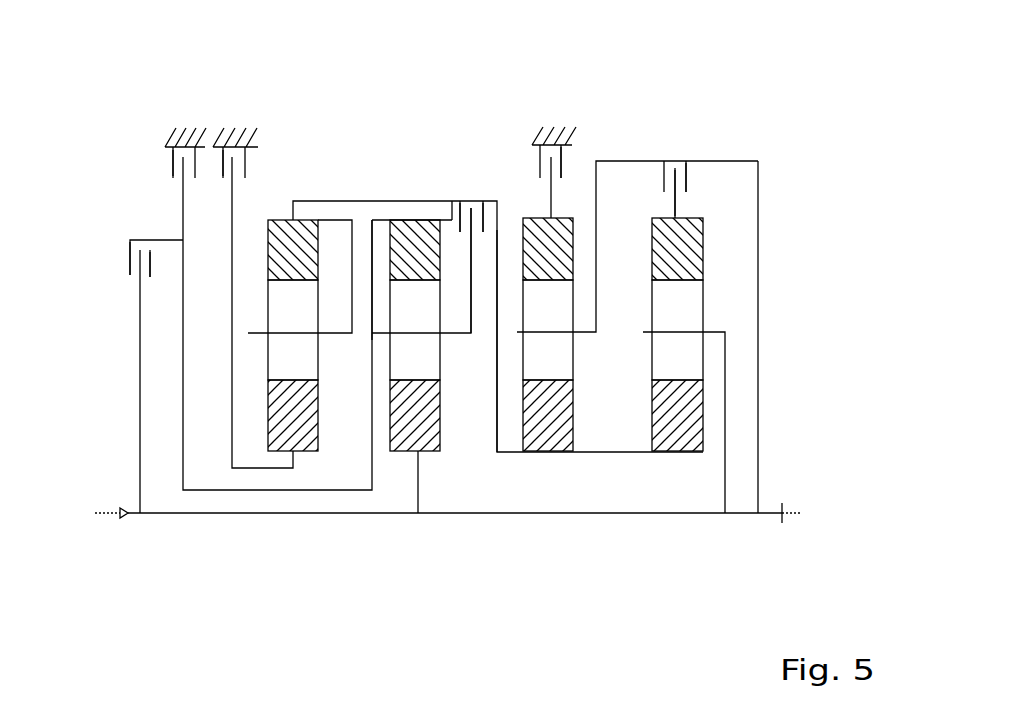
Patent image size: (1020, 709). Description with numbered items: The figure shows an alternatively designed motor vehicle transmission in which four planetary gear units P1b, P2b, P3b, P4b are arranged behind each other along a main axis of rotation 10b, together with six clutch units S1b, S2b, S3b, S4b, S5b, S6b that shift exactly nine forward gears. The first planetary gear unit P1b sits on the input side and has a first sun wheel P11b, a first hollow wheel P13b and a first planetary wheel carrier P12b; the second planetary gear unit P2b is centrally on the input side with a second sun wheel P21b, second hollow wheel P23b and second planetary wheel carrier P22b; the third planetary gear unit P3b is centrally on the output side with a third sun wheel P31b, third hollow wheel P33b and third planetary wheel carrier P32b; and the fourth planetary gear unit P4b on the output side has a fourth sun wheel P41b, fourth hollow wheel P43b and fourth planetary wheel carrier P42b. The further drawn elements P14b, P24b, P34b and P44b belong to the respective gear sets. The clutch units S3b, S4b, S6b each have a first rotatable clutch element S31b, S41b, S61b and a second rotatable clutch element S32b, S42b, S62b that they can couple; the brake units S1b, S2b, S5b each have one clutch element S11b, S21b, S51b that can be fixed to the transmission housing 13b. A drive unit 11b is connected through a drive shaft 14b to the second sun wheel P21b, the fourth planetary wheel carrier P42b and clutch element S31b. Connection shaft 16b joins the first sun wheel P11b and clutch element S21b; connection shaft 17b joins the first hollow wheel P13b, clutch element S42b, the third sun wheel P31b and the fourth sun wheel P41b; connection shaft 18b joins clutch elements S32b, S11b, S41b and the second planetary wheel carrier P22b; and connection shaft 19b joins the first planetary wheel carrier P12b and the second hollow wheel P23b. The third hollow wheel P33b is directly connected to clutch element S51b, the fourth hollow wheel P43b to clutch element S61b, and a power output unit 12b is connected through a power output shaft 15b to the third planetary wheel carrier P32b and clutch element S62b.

The main axis of rotation 10b is at (740, 515).
The drive unit 11b is at (133, 521).
The power output unit 12b is at (784, 528).
The transmission housing 13b is at (227, 129).
The drive shaft 14b is at (497, 385).
The power output shaft 15b is at (758, 190).
The connection shaft 16b is at (232, 352).
The connection shaft 17b is at (503, 455).
The connection shaft 18b is at (183, 410).
The connection shaft 19b is at (370, 223).
The first clutch unit S1b is at (184, 122).
The clutch element of the first clutch unit S11b is at (223, 165).
The second clutch unit S2b is at (246, 122).
The clutch element of the second clutch unit S21b is at (183, 160).
The third clutch unit S3b is at (142, 233).
The first rotatable clutch element of the third clutch unit S31b is at (130, 268).
The second rotatable clutch element of the third clutch unit S32b is at (130, 267).
The fourth clutch unit S4b is at (473, 230).
The first rotatable clutch element of the fourth clutch unit S41b is at (484, 194).
The second rotatable clutch element of the fourth clutch unit S42b is at (463, 232).
The fifth clutch unit S5b is at (585, 157).
The clutch element of the fifth clutch unit S51b is at (562, 170).
The sixth clutch unit S6b is at (700, 165).
The first rotatable clutch element of the sixth clutch unit S61b is at (675, 165).
The second rotatable clutch element of the sixth clutch unit S62b is at (699, 177).
The first planetary gear unit P1b is at (302, 193).
The first sun wheel P11b is at (283, 425).
The first planetary wheel carrier P12b is at (310, 338).
The first hollow wheel P13b is at (283, 237).
The carrier of first planetary gear set P14b is at (297, 348).
The second planetary gear unit P2b is at (391, 190).
The second sun wheel P21b is at (403, 400).
The second planetary wheel carrier P22b is at (433, 345).
The second hollow wheel P23b is at (415, 243).
The carrier of second planetary gear set P24b is at (418, 347).
The third planetary gear unit P3b is at (575, 198).
The third sun wheel P31b is at (563, 395).
The third planetary wheel carrier P32b is at (553, 303).
The third hollow wheel P33b is at (548, 262).
The carrier of third planetary gear set P34b is at (565, 300).
The fourth planetary gear unit P4b is at (700, 204).
The fourth sun wheel P41b is at (690, 403).
The fourth planetary wheel carrier P42b is at (690, 348).
The fourth hollow wheel P43b is at (685, 245).
The carrier of fourth planetary gear set P44b is at (688, 298).